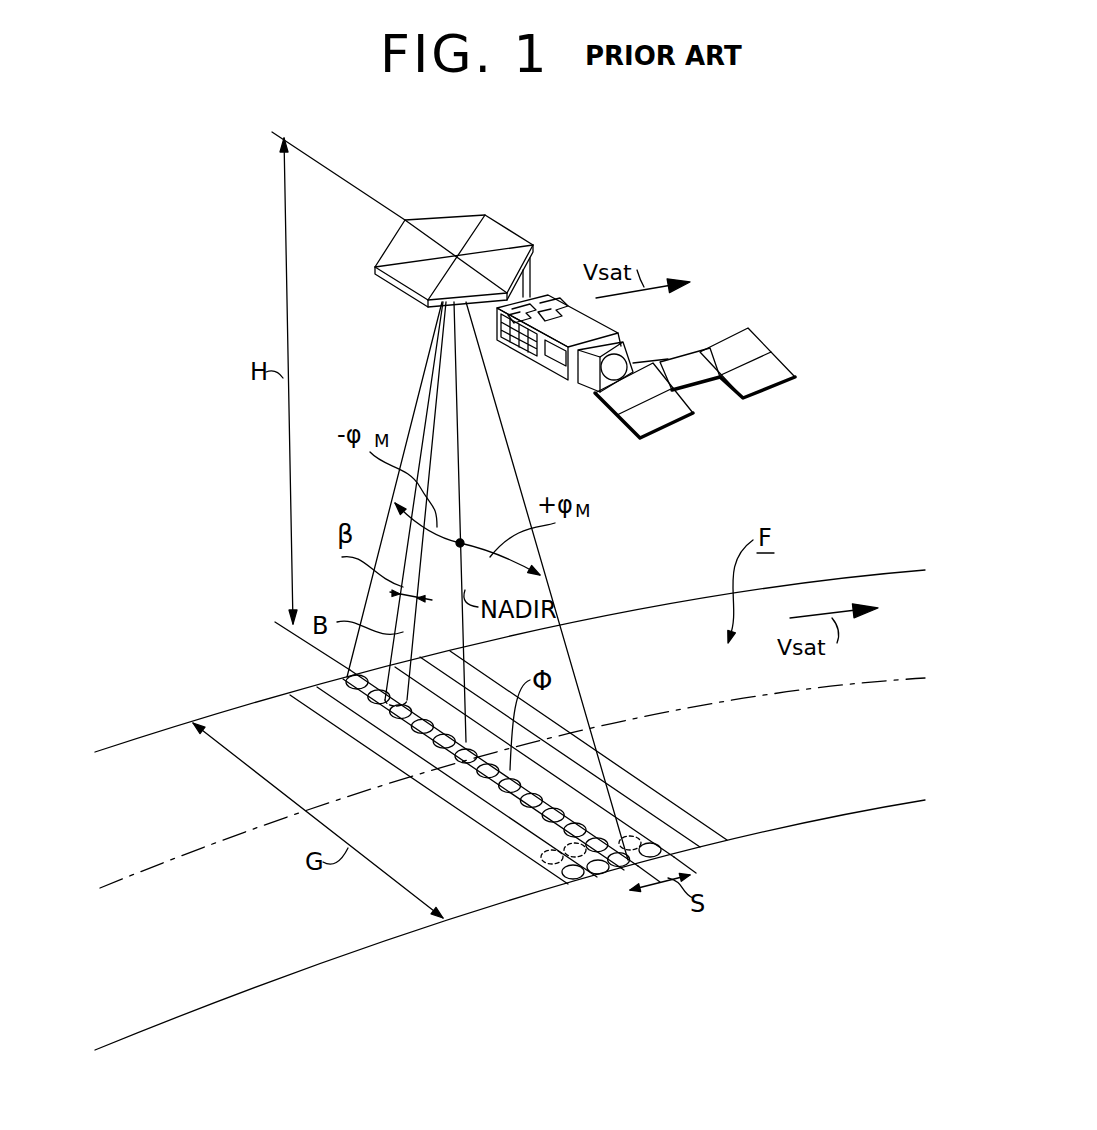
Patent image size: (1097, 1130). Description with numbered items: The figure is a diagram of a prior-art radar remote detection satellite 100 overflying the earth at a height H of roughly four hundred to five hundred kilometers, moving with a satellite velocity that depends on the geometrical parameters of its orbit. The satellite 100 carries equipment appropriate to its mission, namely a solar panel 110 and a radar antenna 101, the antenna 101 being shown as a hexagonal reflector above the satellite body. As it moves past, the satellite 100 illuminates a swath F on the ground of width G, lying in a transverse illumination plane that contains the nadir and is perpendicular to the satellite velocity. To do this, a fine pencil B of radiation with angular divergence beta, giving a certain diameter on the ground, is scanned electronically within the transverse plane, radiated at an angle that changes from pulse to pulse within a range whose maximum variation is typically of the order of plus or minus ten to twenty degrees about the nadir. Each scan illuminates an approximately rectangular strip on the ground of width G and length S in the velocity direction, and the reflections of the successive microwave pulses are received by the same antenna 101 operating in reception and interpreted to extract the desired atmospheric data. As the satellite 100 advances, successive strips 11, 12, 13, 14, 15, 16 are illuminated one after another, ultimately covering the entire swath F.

The satellite 100 is at (560, 293).
The radar antenna 101 is at (460, 212).
The solar panel 110 is at (755, 343).
The strip 11 is at (472, 812).
The strip 12 is at (510, 813).
The strip 13 is at (557, 825).
The strip 14 is at (585, 803).
The strip 15 is at (643, 820).
The strip 16 is at (697, 828).